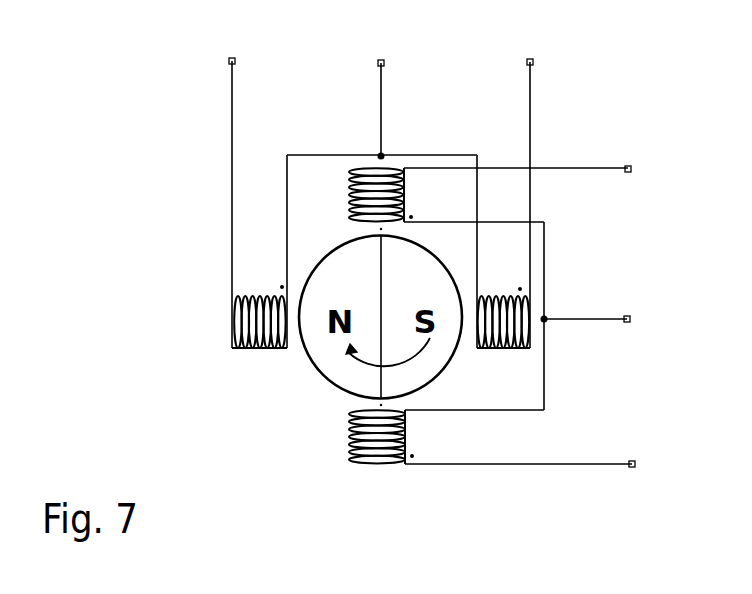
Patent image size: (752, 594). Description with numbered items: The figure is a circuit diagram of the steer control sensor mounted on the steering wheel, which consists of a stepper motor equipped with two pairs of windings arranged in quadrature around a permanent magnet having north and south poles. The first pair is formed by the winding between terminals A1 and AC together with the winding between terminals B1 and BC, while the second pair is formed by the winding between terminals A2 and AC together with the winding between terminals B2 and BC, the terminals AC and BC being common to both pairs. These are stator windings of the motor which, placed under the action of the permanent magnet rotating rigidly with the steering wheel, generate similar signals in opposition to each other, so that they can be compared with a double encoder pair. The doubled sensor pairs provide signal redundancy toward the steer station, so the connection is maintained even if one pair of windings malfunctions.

The winding terminal A1 is at (216, 45).
The winding center terminal AC is at (369, 47).
The winding terminal A2 is at (519, 46).
The winding terminal B1 is at (642, 152).
The winding center terminal BC is at (644, 301).
The winding terminal B2 is at (645, 447).